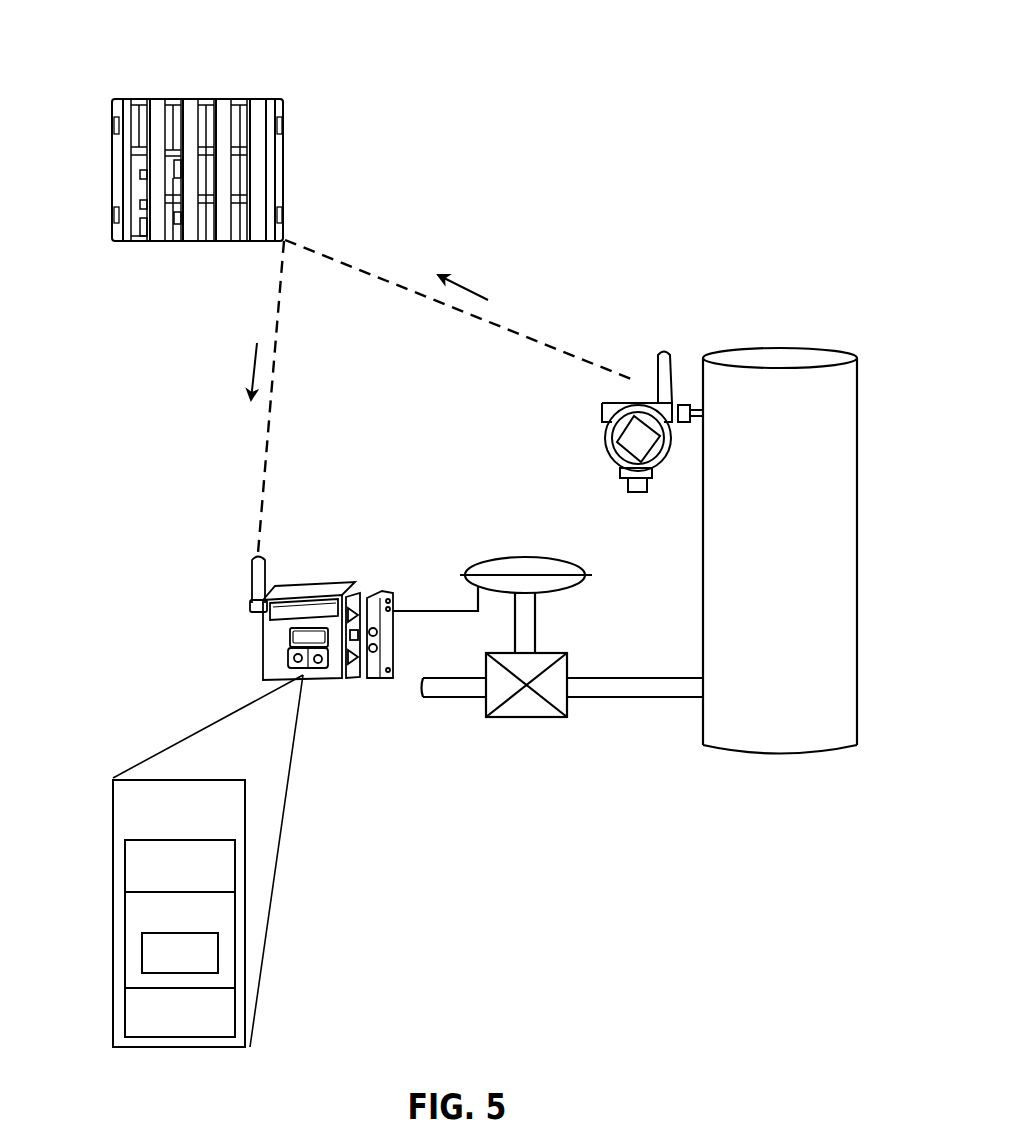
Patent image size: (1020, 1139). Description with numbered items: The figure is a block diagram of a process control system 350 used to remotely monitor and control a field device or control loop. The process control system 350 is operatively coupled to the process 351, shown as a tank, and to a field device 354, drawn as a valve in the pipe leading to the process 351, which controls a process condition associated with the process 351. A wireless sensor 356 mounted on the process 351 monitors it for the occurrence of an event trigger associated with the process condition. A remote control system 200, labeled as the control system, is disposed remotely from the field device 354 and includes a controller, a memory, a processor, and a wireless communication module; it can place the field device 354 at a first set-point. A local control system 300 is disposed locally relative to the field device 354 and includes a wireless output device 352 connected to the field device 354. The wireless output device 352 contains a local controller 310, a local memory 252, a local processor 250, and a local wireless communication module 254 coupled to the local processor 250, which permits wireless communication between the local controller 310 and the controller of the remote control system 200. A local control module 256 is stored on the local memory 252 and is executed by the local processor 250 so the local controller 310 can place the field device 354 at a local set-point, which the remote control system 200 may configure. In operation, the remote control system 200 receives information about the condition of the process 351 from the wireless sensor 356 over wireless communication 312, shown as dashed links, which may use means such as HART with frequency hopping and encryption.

The process control system 350 is at (559, 48).
The remote control system 200 is at (112, 175).
The wireless communication 312 is at (330, 258).
The local control system 300 is at (376, 411).
The process 351 is at (763, 523).
The wireless sensor 356 is at (612, 452).
The field device 354 is at (512, 718).
The wireless output device 352 is at (348, 596).
The local controller 310 is at (162, 814).
The local processor 250 is at (162, 876).
The local memory 252 is at (162, 923).
The local control module 256 is at (162, 964).
The local wireless communication module 254 is at (162, 1023).